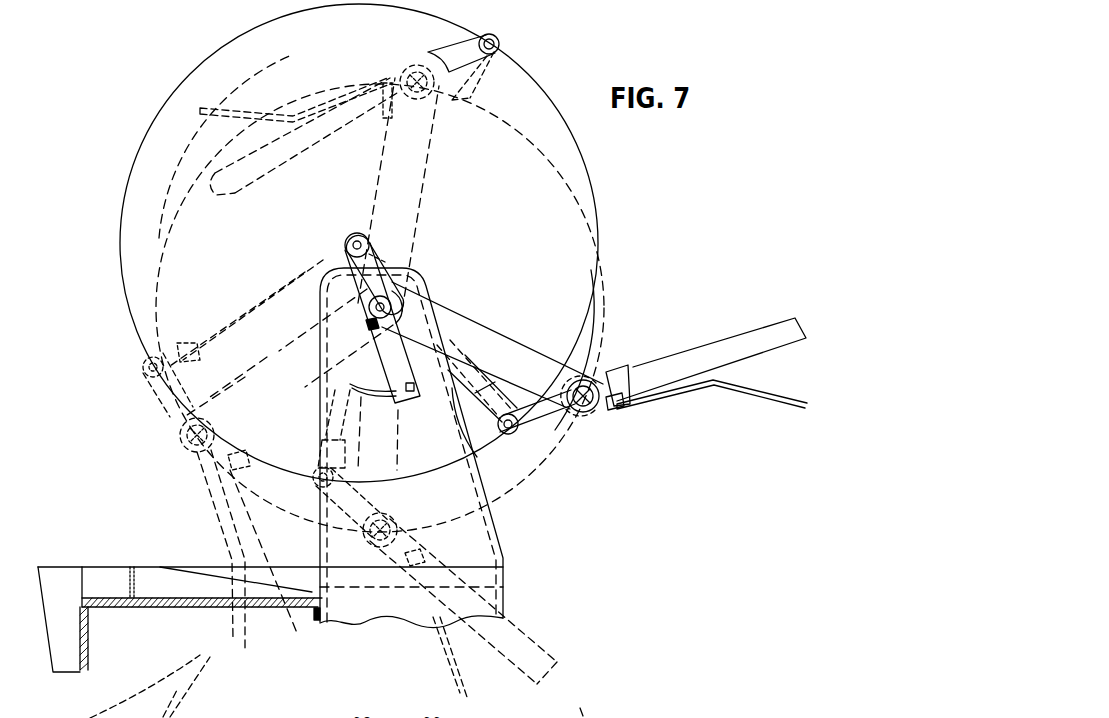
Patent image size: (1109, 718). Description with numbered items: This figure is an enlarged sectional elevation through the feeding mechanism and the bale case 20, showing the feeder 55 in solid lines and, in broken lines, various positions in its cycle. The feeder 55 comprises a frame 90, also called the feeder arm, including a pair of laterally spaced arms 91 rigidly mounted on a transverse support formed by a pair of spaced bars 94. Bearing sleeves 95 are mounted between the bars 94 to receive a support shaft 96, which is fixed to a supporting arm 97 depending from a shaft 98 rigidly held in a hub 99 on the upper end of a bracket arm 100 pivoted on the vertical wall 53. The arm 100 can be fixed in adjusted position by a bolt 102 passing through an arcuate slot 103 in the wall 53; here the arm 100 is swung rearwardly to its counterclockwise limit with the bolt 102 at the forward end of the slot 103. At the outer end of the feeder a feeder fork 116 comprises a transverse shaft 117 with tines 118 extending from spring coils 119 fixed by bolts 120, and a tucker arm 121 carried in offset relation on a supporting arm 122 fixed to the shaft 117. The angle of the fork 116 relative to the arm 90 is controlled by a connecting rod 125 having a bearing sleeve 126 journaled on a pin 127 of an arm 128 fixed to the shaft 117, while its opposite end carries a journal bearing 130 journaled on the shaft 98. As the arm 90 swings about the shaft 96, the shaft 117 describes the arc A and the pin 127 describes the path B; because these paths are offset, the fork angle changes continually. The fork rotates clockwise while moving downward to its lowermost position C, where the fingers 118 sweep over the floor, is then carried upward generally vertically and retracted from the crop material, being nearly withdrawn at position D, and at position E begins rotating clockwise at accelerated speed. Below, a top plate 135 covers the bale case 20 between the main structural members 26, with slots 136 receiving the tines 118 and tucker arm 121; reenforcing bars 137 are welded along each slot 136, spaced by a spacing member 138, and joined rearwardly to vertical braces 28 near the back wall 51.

The bale case 20 is at (157, 586).
The main structural members 26 is at (102, 598).
The vertical braces 28 is at (70, 655).
The back wall 51 is at (88, 657).
The vertical wall 53 is at (450, 545).
The feeder 55 is at (657, 318).
The frame 90 is at (478, 322).
The arms 91 is at (424, 183).
The bars 94 is at (380, 327).
The bearing sleeves 95 is at (370, 306).
The support shaft 96 is at (370, 324).
The supporting arm 97 is at (378, 271).
The shaft 98 is at (345, 244).
The hub 99 is at (355, 234).
The bracket arm 100 is at (397, 362).
The bolt 102 is at (410, 398).
The arcuate slot 103 is at (368, 398).
The feeder fork 116 is at (700, 404).
The transverse shaft 117 is at (558, 383).
The tines 118 is at (760, 398).
The spring coils 119 is at (612, 404).
The bolts 120 is at (588, 413).
The tucker arm 121 is at (707, 353).
The supporting arm 122 is at (608, 378).
The connecting rod 125 is at (462, 407).
The bearing sleeve 126 is at (477, 451).
The pin 127 is at (512, 428).
The arm 128 is at (535, 424).
The journal bearing 130 is at (380, 263).
The top plate 135 is at (180, 608).
The slots 136 is at (148, 608).
The reenforcing bars 137 is at (270, 592).
The spacing member 138 is at (128, 583).
The dotted line A is at (566, 178).
The broken line B is at (533, 87).
The position C is at (512, 628).
The position D is at (186, 468).
The position E is at (333, 93).